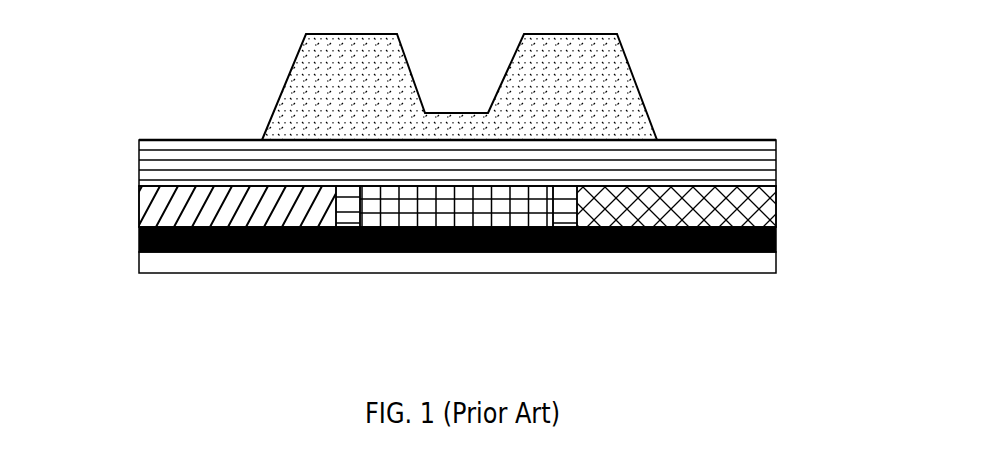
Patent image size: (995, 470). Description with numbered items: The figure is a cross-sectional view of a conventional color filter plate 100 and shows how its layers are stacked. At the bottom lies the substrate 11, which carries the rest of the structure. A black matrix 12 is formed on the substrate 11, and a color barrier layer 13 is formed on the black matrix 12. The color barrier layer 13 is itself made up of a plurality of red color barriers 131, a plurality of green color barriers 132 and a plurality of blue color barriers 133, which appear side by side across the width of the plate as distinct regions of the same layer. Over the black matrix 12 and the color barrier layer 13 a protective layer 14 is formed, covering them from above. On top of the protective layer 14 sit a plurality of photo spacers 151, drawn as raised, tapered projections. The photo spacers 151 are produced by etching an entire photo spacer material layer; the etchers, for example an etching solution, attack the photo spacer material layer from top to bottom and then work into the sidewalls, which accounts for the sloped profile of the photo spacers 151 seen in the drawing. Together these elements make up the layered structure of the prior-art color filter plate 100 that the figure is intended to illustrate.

The color filter plate 100 is at (137, 31).
The substrate 11 is at (776, 260).
The black matrix 12 is at (776, 230).
The color barrier layer 13 is at (776, 193).
The red color barriers 131 is at (138, 207).
The green color barriers 132 is at (467, 195).
The blue color barriers 133 is at (662, 253).
The protective layer 14 is at (776, 145).
The photo spacers 151 is at (618, 48).